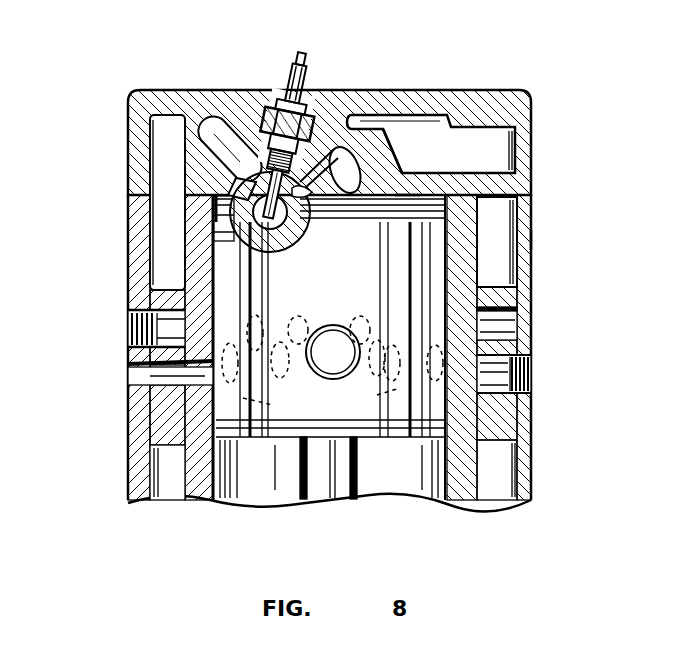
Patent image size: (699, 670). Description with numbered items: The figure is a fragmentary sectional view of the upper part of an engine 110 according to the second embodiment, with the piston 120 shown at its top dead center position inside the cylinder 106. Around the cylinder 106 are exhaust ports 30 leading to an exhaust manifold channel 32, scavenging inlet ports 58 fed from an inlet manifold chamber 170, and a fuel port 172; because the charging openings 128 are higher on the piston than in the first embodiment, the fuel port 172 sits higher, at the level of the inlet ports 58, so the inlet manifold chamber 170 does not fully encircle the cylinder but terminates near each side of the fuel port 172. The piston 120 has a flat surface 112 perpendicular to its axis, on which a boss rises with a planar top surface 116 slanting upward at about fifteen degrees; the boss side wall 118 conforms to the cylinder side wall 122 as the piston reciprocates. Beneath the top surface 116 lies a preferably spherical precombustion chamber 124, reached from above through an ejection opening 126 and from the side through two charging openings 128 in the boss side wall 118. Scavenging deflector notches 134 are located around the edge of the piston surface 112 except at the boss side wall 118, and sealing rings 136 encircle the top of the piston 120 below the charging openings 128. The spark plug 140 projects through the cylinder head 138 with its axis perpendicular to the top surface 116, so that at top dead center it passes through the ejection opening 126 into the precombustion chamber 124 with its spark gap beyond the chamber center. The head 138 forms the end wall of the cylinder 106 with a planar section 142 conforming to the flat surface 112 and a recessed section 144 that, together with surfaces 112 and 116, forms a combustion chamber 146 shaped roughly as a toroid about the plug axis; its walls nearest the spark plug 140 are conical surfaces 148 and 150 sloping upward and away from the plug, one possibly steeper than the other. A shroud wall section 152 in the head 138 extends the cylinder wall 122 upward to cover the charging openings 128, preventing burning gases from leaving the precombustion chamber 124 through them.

The engine 110 is at (553, 240).
The cylinder head 138 is at (408, 95).
The spark plug 140 is at (300, 52).
The recessed section 144 is at (233, 115).
The conical wall surface 148 is at (282, 95).
The conical wall surface 150 is at (326, 100).
The combustion chamber 146 is at (382, 133).
The planar top surface 116 is at (396, 160).
The planar section 142 is at (400, 200).
The boss side wall 118 is at (225, 180).
The charging openings 128 is at (230, 190).
The shroud wall section 152 is at (215, 208).
The cylinder side wall 122 is at (195, 228).
The ejection opening 126 is at (298, 197).
The precombustion chamber 124 is at (282, 250).
The sealing rings 136 is at (512, 214).
The scavenging deflector notches 134 is at (408, 200).
The flat surface 112 is at (440, 205).
The cylinder 106 is at (450, 257).
The piston 120 is at (432, 277).
The exhaust manifold channel 32 is at (170, 330).
The inlet manifold chamber 170 is at (512, 380).
The fuel port 172 is at (150, 373).
The exhaust ports 30 is at (413, 323).
The scavenging inlet ports 58 is at (321, 399).